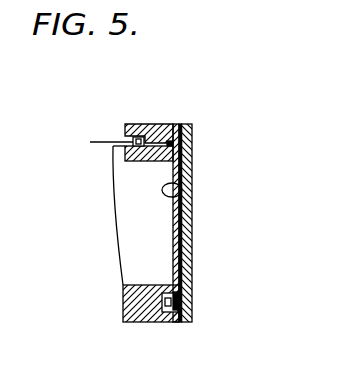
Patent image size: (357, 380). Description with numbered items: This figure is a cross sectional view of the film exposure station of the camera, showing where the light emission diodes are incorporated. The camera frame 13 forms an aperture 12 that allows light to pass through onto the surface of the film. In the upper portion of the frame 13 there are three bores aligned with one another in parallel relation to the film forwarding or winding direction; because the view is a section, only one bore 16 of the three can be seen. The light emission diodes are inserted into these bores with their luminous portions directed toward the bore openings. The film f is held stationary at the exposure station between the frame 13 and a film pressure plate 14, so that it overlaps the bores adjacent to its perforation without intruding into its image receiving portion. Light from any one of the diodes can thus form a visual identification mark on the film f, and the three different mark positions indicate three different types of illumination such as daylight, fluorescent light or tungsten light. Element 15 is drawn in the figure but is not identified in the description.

The aperture 12 is at (142, 263).
The frame 13 is at (146, 306).
The film pressure plate 14 is at (185, 238).
The fastener 15 is at (178, 305).
The bore 16 is at (165, 126).
The film f is at (182, 192).